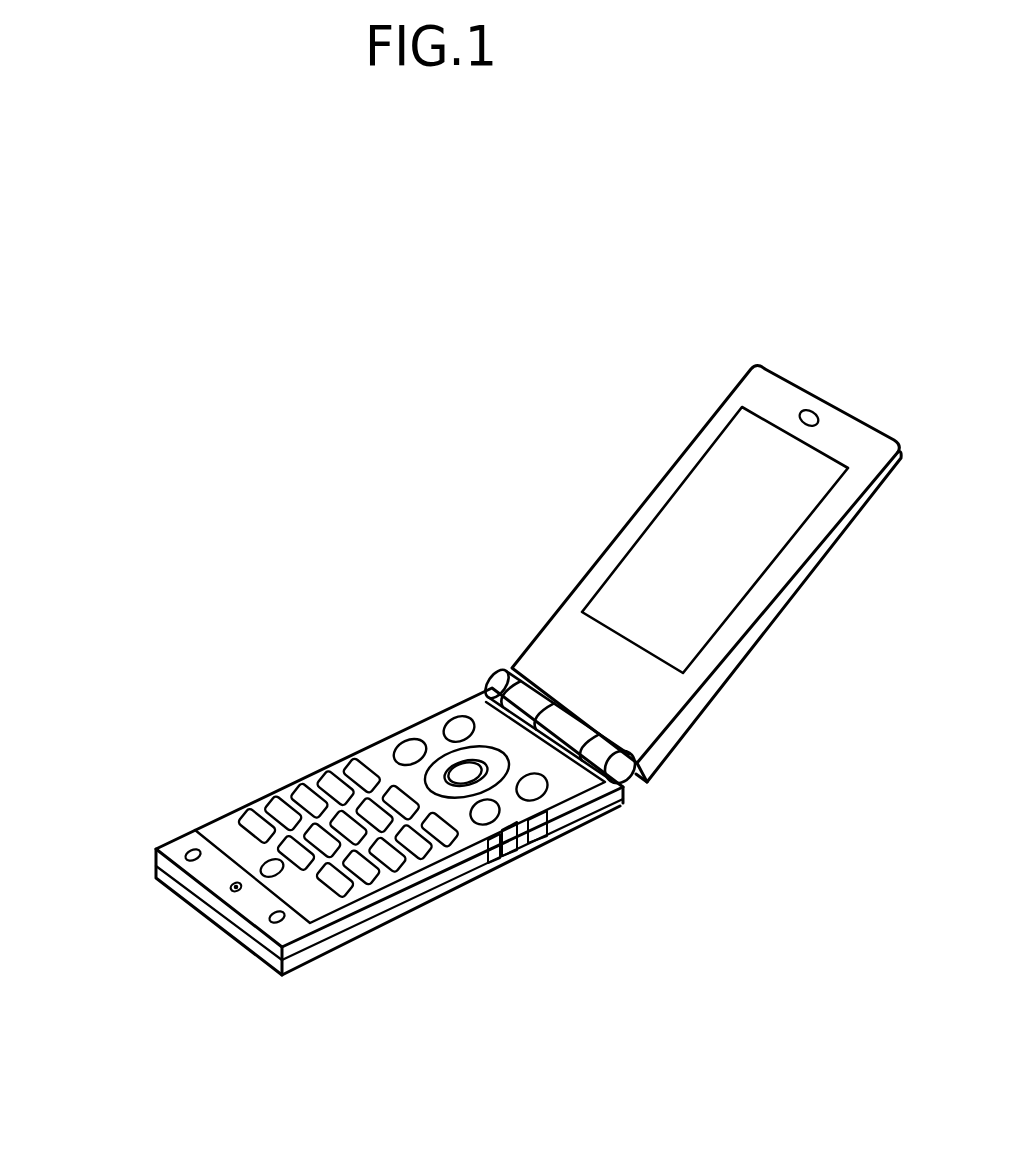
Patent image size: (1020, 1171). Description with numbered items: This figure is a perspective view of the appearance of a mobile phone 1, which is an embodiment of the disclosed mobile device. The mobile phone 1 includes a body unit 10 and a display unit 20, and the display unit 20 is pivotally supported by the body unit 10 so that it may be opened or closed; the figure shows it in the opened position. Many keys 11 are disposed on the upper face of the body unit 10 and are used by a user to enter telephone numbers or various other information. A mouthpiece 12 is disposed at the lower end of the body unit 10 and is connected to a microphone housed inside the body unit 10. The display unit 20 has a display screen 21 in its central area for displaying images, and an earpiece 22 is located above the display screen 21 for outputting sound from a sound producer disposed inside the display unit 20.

The mobile phone 1 is at (428, 338).
The body unit 10 is at (278, 700).
The keys 11 is at (367, 738).
The mouthpiece 12 is at (230, 883).
The display unit 20 is at (644, 405).
The display screen 21 is at (643, 510).
The earpiece 22 is at (805, 412).